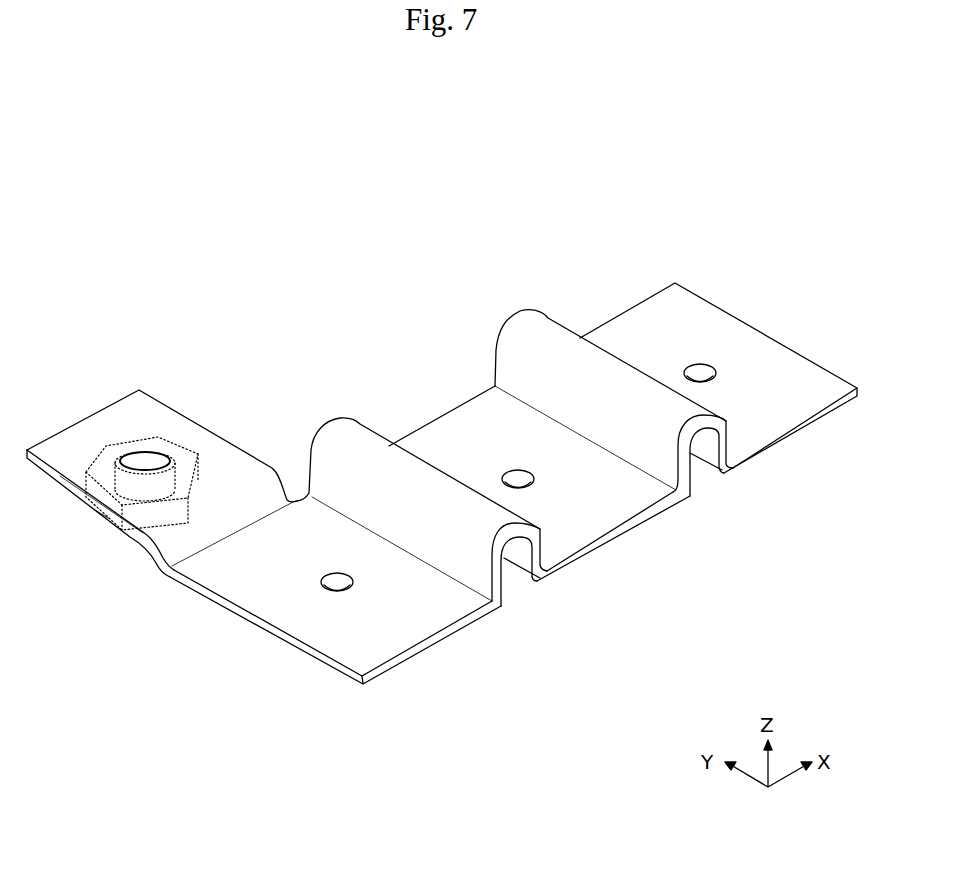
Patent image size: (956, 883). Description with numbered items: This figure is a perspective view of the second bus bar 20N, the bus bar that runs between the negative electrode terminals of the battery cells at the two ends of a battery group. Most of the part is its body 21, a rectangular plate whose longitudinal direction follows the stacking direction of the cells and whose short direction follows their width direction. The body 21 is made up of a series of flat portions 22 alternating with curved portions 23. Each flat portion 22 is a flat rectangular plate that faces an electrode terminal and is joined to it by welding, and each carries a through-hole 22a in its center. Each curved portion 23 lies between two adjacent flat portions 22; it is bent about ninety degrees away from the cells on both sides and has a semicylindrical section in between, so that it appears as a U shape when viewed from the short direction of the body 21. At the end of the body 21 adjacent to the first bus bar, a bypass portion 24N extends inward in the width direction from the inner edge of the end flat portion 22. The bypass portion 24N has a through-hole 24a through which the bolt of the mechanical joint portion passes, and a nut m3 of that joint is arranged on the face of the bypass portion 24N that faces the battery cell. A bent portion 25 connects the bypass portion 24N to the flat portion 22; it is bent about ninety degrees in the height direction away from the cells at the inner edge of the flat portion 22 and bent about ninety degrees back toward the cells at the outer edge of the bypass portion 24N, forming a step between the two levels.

The second bus bar 20N is at (217, 170).
The body 21 is at (437, 410).
The flat portion 22 is at (250, 572).
The through-hole 22a is at (350, 583).
The curved portion 23 is at (353, 418).
The bypass portion 24N is at (67, 437).
The through-hole 24a is at (153, 447).
The bent portion 25 is at (283, 496).
The nut m3 is at (104, 520).